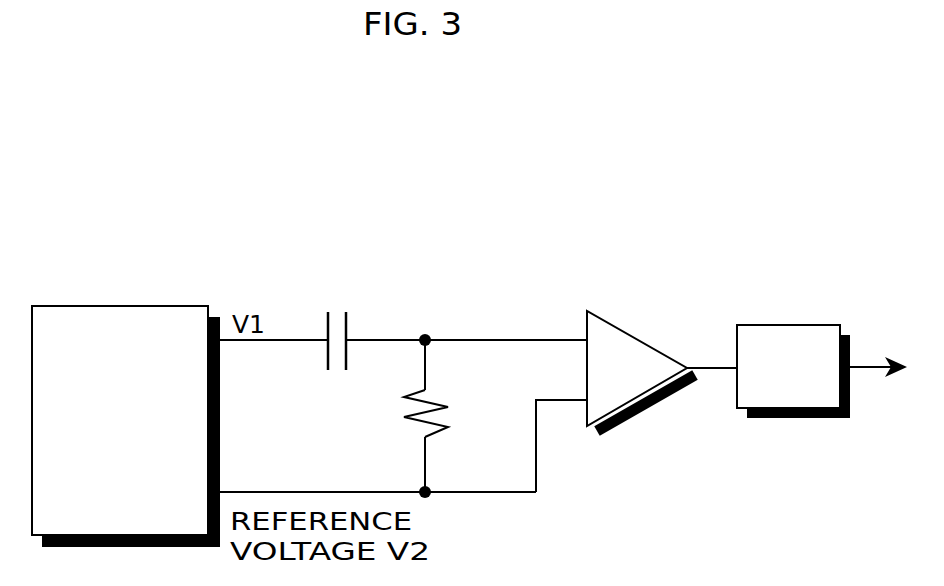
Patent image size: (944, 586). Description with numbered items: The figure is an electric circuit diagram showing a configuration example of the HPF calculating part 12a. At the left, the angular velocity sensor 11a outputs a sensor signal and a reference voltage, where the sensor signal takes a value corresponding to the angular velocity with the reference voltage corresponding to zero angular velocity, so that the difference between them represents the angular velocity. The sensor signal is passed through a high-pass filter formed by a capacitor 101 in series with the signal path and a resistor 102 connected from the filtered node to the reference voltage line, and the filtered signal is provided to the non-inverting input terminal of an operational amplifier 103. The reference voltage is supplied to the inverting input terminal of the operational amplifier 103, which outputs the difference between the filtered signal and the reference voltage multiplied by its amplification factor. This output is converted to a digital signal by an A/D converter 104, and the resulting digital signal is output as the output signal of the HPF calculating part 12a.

The angular velocity sensor 11a is at (131, 306).
The HPF calculating part 12a is at (602, 240).
The capacitor 101 is at (347, 316).
The resistor 102 is at (434, 403).
The operational amplifier 103 is at (628, 339).
The A/D converter 104 is at (777, 325).